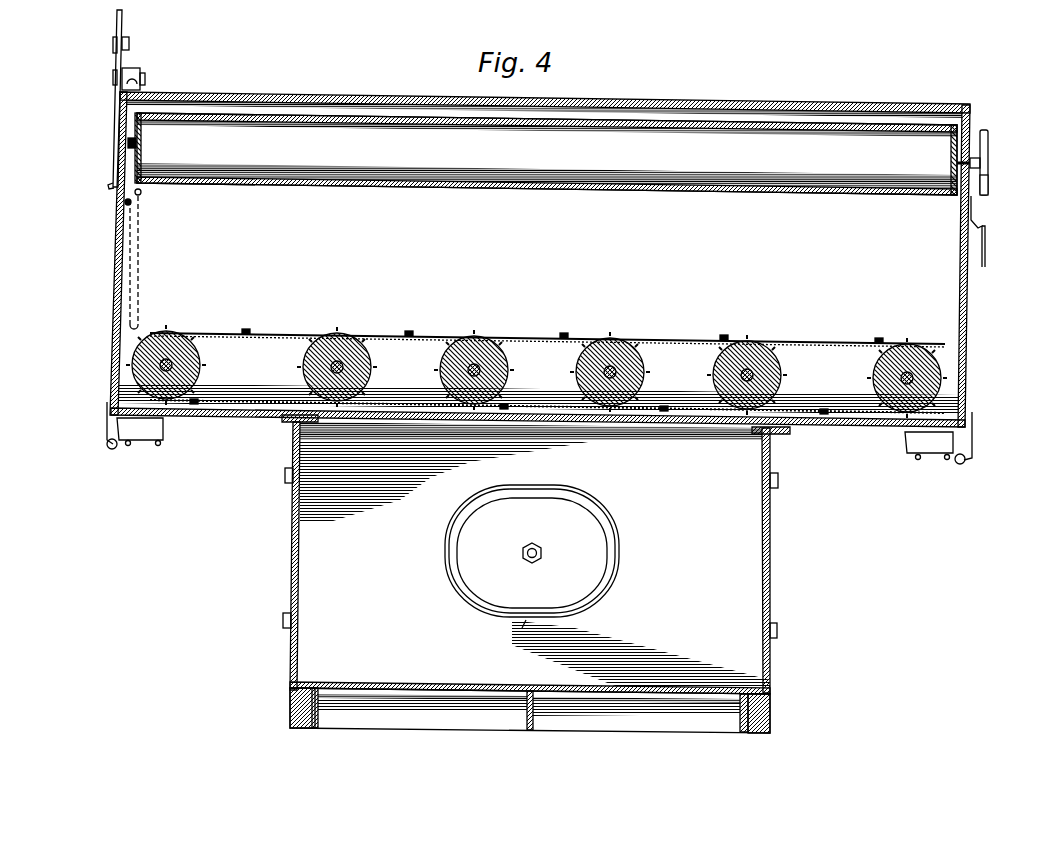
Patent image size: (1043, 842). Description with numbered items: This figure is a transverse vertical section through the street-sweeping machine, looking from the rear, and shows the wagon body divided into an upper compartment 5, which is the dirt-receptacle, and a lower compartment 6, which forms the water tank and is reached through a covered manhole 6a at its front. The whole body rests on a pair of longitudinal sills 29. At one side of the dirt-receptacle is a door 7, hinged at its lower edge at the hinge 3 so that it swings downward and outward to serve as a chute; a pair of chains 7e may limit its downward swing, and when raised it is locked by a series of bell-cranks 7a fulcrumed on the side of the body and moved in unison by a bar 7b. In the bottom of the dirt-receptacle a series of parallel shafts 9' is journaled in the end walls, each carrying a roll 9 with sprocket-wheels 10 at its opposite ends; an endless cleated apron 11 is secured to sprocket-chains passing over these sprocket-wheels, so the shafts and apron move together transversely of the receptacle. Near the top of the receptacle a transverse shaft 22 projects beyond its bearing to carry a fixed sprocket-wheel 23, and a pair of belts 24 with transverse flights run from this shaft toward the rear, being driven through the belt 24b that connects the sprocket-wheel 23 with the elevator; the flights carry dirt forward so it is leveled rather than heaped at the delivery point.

The hinge 3 is at (978, 467).
The upper compartment 5 is at (540, 259).
The lower compartment 6 is at (536, 554).
The manhole 6a is at (604, 549).
The door 7 is at (118, 272).
The bell-cranks 7a is at (120, 66).
The bar 7b is at (129, 40).
The chains 7e is at (141, 227).
The rolls 9 is at (536, 371).
The parallel shafts 9' is at (547, 342).
The sprocket-wheels 10 is at (350, 337).
The endless transversely-movable apron 11 is at (548, 339).
The transverse shaft 22 is at (990, 164).
The sprocket-wheel 23 is at (989, 186).
The belts 24 is at (553, 190).
The belt 24b is at (985, 247).
The longitudinal sills 29 is at (290, 714).